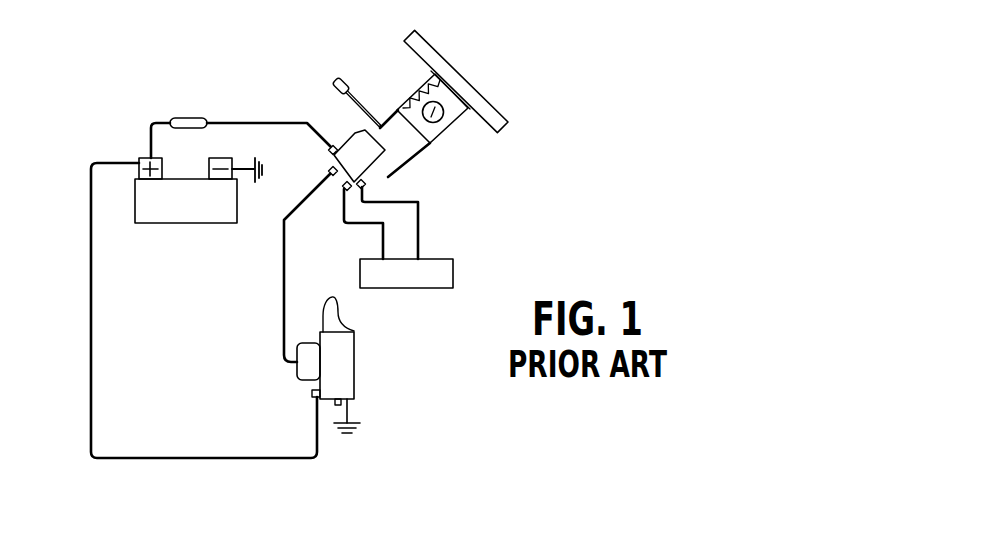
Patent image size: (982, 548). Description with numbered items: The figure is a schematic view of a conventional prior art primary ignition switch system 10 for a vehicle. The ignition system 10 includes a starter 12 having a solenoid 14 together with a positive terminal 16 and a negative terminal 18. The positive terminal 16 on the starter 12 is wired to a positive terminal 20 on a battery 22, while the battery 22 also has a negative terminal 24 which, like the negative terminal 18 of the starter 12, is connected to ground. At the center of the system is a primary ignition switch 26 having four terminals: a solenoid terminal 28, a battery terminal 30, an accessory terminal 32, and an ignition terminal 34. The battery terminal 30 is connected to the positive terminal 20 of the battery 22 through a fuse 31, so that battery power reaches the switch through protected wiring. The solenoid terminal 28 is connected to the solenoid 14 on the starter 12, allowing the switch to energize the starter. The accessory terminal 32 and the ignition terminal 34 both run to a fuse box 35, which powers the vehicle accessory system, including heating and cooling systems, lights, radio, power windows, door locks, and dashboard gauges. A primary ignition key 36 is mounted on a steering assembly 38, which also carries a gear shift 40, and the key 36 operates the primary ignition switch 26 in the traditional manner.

The ignition switch system 10 is at (71, 445).
The starter 12 is at (353, 364).
The solenoid 14 is at (308, 367).
The positive terminal 16 is at (312, 393).
The negative terminal 18 is at (348, 411).
The positive terminal 20 is at (142, 156).
The battery 22 is at (187, 223).
The negative terminal 24 is at (223, 151).
The primary ignition switch 26 is at (345, 138).
The solenoid terminal 28 is at (329, 168).
The battery terminal 30 is at (329, 146).
The fuse 31 is at (185, 118).
The accessory terminal 32 is at (340, 185).
The ignition terminal 34 is at (366, 180).
The fuse box 35 is at (454, 268).
The primary ignition key 36 is at (443, 116).
The steering assembly 38 is at (432, 42).
The gear shift 40 is at (366, 108).